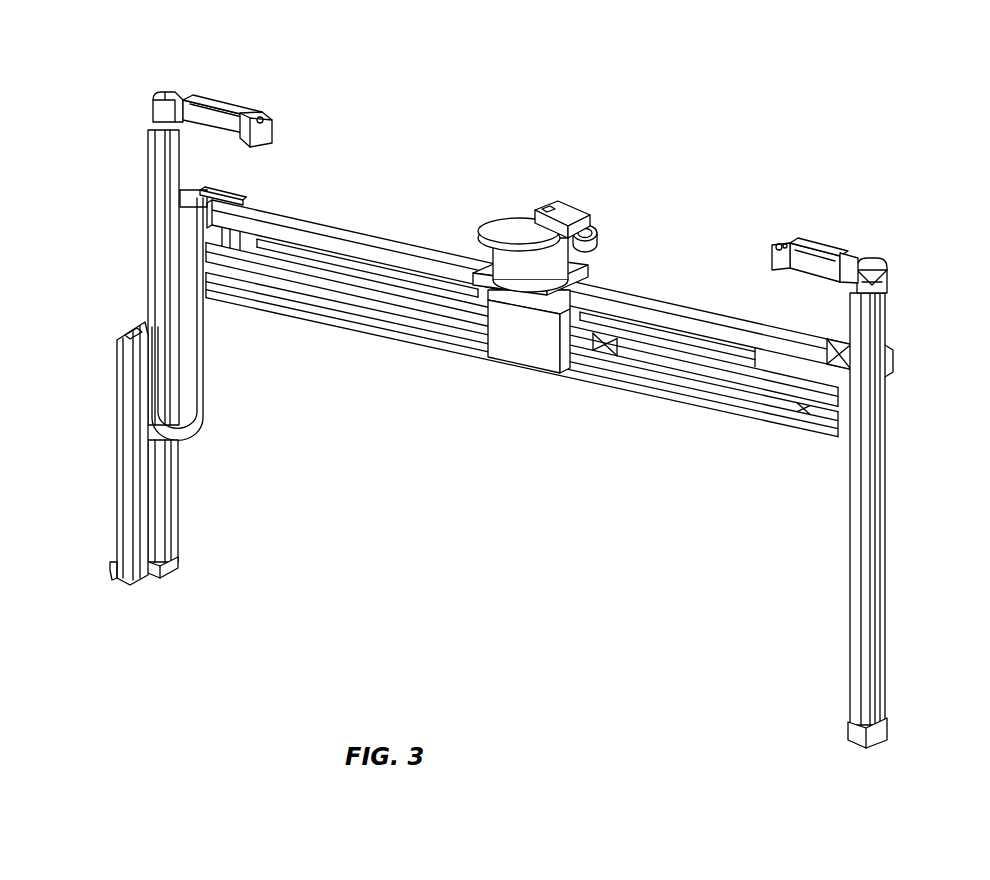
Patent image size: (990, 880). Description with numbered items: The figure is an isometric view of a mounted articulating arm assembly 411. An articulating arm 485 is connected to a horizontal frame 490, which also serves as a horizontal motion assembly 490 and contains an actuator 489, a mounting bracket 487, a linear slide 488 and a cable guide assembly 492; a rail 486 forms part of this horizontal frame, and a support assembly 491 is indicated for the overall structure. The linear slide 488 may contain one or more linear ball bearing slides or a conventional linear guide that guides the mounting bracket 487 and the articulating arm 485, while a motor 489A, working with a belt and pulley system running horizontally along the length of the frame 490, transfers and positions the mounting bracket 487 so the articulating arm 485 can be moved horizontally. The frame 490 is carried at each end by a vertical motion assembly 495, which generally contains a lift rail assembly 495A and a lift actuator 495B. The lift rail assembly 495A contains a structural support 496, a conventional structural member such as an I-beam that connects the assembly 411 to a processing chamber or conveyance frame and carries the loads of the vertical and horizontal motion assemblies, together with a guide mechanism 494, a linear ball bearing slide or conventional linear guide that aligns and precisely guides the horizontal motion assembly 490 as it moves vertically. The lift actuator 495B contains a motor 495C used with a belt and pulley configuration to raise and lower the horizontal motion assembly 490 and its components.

The articulating arm assembly 411 is at (691, 169).
The articulating arm 485 is at (578, 194).
The middle rail 486 is at (707, 301).
The mounting bracket 487 is at (592, 264).
The linear slide 488 is at (657, 393).
The actuator 489 is at (767, 401).
The motor 489A is at (208, 182).
The frame 490 is at (349, 215).
The support assembly 491 is at (793, 165).
The cable guide assembly 492 is at (375, 276).
The guide mechanism 494 is at (176, 158).
The vertical motion assembly 495 is at (147, 292).
The lift rail assembly 495A is at (149, 195).
The lift actuator 495B is at (244, 106).
The motor 495C is at (198, 97).
The structural support 496 is at (147, 237).